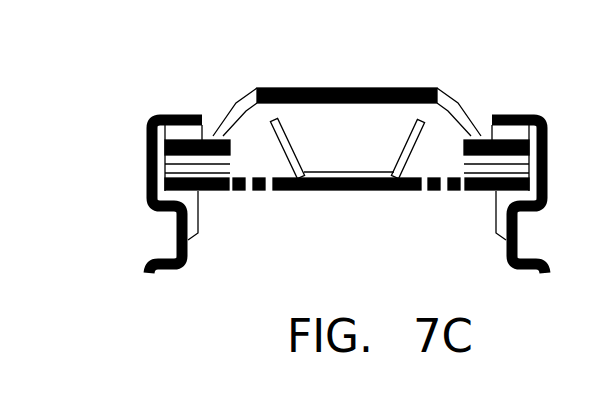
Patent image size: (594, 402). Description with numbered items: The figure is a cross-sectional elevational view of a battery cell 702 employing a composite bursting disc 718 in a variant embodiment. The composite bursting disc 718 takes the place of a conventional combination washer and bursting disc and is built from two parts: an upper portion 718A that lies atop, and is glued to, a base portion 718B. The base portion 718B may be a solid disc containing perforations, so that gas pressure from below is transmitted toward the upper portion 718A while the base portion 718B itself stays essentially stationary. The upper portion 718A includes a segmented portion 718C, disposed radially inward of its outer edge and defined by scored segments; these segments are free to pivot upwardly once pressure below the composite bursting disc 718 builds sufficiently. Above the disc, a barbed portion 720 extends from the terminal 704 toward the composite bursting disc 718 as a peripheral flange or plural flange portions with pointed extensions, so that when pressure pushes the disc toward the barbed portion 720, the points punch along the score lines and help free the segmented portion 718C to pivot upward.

The battery cell 702 is at (140, 231).
The terminal 704 is at (372, 87).
The composite bursting disc 718 is at (268, 212).
The upper portion 718A is at (272, 134).
The base portion 718B is at (375, 190).
The segmented portion 718C is at (413, 134).
The barbed portion 720 is at (208, 136).